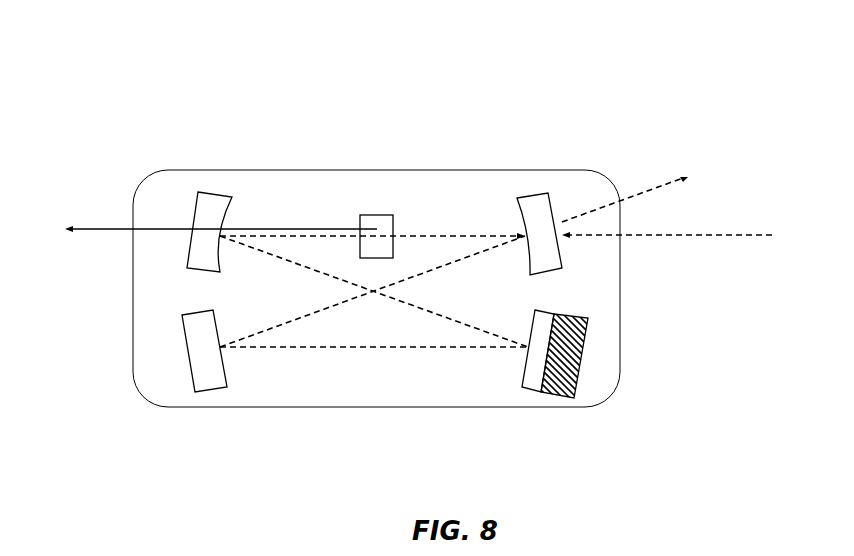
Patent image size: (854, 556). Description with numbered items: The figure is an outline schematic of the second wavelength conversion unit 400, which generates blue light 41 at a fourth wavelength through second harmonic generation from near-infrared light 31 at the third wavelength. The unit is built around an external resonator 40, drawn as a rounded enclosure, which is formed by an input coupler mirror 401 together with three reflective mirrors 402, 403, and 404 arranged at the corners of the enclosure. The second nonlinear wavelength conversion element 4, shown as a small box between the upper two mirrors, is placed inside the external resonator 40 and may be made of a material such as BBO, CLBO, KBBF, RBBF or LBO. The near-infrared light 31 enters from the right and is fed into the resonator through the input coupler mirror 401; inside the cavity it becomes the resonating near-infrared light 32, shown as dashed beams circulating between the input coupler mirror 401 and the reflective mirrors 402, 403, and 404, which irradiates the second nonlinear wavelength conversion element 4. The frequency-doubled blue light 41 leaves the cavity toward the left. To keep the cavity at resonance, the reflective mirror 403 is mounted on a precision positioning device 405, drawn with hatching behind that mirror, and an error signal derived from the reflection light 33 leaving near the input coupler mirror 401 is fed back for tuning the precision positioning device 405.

The second wavelength conversion unit 400 is at (128, 60).
The external resonator 40 is at (295, 164).
The blue light 41 is at (115, 224).
The near-infrared light 31 is at (772, 227).
The near-infrared light 32 is at (485, 223).
The reflection light 33 is at (653, 182).
The second nonlinear wavelength conversion element 4 is at (377, 206).
The input coupler mirror 401 is at (538, 186).
The reflective mirror 402 is at (218, 187).
The reflective mirror 403 is at (528, 394).
The reflective mirror 404 is at (208, 401).
The precision positioning device 405 is at (572, 403).